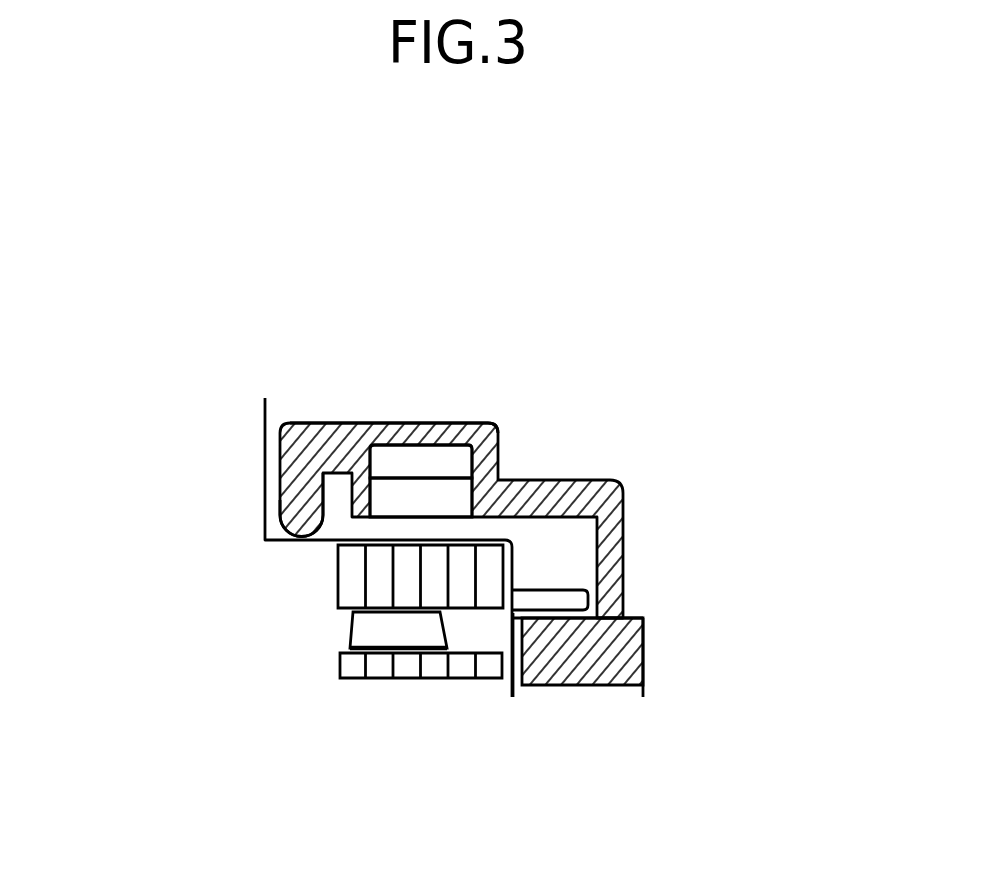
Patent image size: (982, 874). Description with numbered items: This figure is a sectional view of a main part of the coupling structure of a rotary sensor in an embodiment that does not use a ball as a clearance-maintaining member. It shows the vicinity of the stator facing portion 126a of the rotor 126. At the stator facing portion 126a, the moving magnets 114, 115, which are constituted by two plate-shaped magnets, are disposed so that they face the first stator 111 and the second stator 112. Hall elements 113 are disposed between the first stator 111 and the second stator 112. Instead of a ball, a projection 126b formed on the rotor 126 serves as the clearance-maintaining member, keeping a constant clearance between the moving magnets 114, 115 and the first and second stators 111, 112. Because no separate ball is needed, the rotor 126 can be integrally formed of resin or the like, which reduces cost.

The first stator 111 is at (407, 665).
The second stator 112 is at (338, 583).
The hall element 113 is at (370, 635).
The moving magnet 114 is at (442, 498).
The moving magnet 115 is at (442, 498).
The rotor 126 is at (618, 548).
The stator facing portion 126a is at (443, 422).
The projection 126b is at (303, 533).